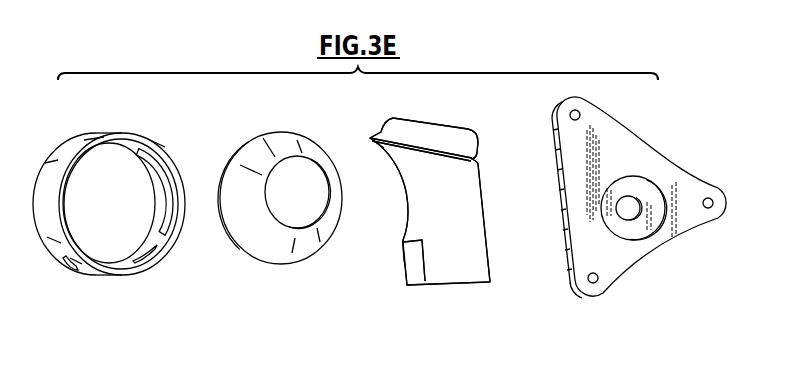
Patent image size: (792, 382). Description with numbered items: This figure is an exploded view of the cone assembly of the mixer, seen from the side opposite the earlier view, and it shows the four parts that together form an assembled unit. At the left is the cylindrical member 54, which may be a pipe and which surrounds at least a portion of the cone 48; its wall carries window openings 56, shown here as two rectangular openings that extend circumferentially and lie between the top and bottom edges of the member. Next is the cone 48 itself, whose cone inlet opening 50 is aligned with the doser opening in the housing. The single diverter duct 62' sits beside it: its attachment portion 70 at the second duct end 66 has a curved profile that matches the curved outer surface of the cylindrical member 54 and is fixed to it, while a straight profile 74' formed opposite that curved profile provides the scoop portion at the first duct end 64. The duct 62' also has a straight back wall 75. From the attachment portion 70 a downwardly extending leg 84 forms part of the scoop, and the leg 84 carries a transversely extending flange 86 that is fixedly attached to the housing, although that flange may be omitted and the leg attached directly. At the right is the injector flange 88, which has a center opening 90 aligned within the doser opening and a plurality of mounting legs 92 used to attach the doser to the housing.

The cone 48 is at (284, 137).
The cone inlet opening 50 is at (312, 175).
The cylindrical member 54 is at (52, 168).
The window openings 56 is at (167, 192).
The diverter duct 62' is at (455, 197).
The first duct end 64 is at (447, 285).
The second duct end 66 is at (371, 137).
The attachment portion 70 is at (406, 193).
The straight profile 74' is at (506, 223).
The straight back wall 75 is at (447, 154).
The downwardly extending leg 84 is at (474, 160).
The transversely extending flange 86 is at (420, 130).
The injector flange 88 is at (627, 152).
The center opening 90 is at (636, 204).
The mounting legs 92 is at (580, 101).